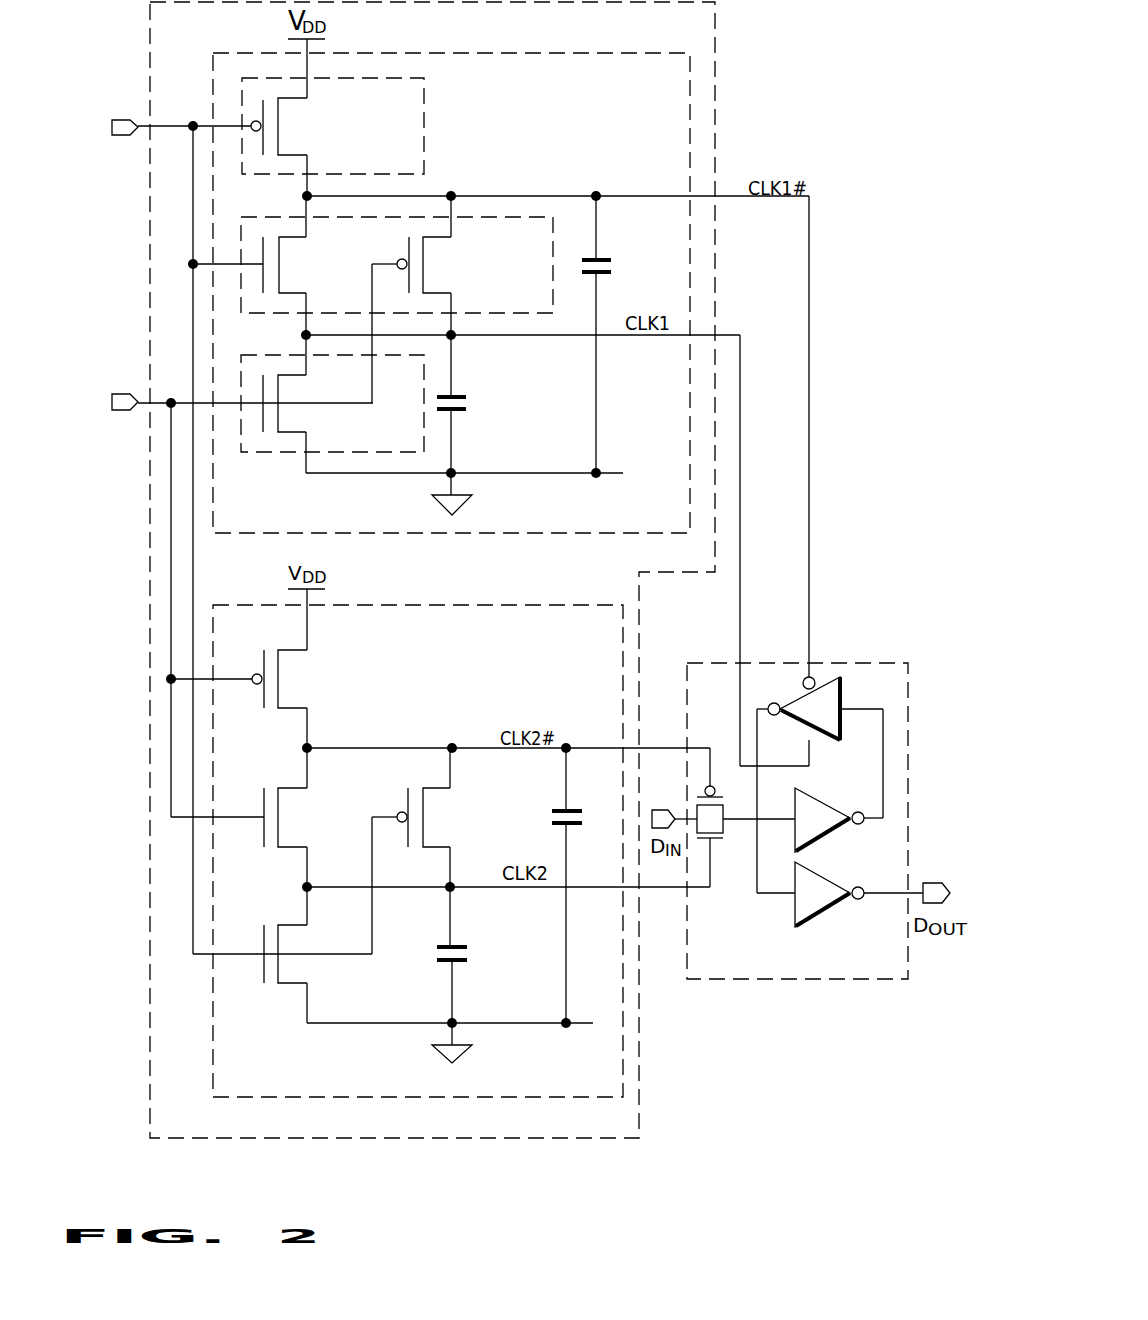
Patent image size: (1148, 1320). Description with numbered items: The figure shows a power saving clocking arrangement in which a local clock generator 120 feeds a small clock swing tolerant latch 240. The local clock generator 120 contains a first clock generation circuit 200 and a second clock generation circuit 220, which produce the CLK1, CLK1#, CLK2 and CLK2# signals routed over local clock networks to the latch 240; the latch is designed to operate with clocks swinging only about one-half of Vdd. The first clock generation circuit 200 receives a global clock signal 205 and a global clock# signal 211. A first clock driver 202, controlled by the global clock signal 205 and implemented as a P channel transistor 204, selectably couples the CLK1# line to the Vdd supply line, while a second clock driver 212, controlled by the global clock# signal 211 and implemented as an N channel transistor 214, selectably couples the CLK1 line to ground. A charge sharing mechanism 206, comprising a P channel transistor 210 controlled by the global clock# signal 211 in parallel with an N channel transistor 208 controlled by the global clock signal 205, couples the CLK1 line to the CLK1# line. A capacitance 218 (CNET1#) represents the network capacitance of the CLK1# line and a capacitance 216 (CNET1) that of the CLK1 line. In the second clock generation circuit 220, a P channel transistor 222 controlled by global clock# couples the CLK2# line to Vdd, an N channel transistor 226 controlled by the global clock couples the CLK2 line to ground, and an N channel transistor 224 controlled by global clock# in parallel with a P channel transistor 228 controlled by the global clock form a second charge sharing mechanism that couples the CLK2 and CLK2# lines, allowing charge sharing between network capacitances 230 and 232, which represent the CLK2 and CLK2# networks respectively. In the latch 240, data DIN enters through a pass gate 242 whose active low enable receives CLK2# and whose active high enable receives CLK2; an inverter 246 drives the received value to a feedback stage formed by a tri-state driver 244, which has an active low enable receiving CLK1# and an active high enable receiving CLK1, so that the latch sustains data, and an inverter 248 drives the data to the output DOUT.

The local clock generator 120 is at (627, 1134).
The first clock generation circuit 200 is at (685, 533).
The first clock driver 202 is at (413, 168).
The P channel transistor 204 is at (315, 123).
The global clock signal 205 is at (128, 118).
The charge sharing mechanism 206 is at (545, 313).
The N channel transistor 208 is at (315, 278).
The P channel transistor 210 is at (463, 263).
The global clock# signal 211 is at (128, 391).
The second clock driver 212 is at (418, 451).
The N channel transistor 214 is at (316, 398).
The capacitance 216 is at (458, 396).
The capacitance 218 is at (586, 258).
The second clock generation circuit 220 is at (610, 1096).
The P channel transistor 222 is at (314, 686).
The N channel transistor 224 is at (315, 826).
The N channel transistor 226 is at (315, 950).
The P channel transistor 228 is at (463, 815).
The network capacitance 230 is at (444, 947).
The network capacitance 232 is at (556, 811).
The small clock swing tolerant latch 240 is at (903, 980).
The pass gate 242 is at (716, 840).
The tri-state driver 244 is at (832, 718).
The inverter 246 is at (828, 831).
The inverter 248 is at (828, 905).